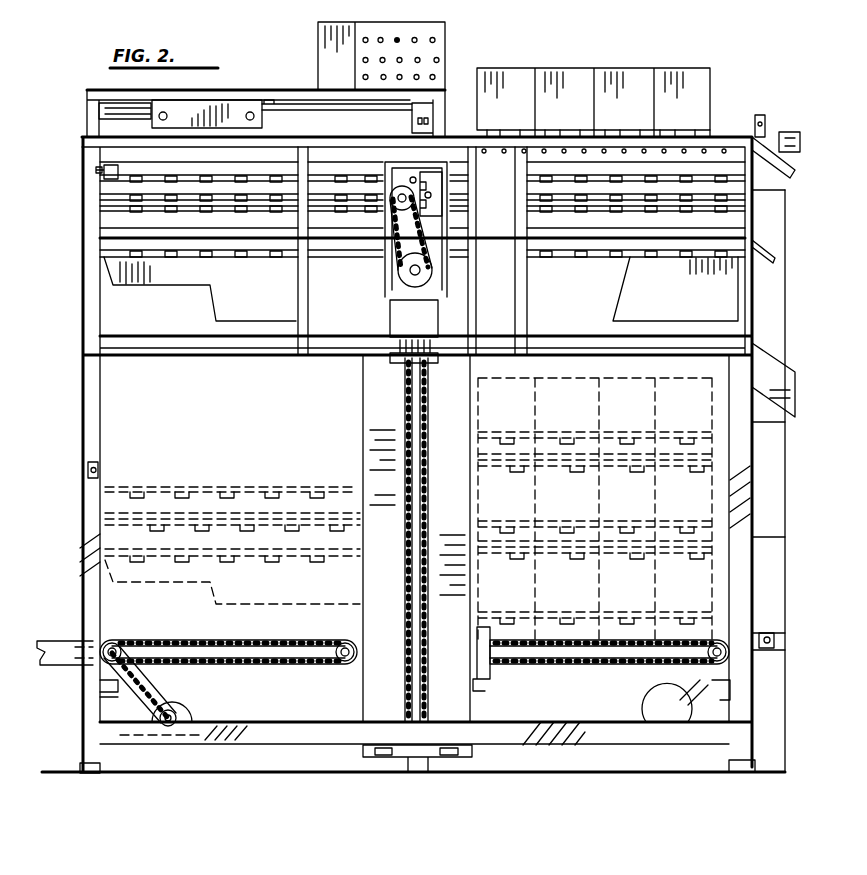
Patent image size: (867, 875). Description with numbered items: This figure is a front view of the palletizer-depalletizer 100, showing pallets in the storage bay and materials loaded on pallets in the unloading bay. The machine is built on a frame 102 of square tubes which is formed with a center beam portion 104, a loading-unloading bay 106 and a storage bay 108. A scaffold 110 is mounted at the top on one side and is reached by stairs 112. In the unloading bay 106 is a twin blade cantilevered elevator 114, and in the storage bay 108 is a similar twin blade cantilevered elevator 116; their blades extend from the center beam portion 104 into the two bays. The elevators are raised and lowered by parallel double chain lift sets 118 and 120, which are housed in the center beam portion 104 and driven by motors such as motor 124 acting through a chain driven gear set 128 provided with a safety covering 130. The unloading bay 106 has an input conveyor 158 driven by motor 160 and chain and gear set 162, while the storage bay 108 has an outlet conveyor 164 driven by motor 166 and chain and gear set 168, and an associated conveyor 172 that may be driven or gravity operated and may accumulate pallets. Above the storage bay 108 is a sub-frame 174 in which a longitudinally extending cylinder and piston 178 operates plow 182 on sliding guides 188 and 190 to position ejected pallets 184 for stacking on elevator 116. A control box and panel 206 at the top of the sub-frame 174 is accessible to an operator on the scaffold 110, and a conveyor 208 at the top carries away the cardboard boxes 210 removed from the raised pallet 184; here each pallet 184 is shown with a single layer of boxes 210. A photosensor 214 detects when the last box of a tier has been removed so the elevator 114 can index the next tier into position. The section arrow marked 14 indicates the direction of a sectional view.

The palletizer-depalletizer 100 is at (458, 102).
The frame 102 is at (88, 518).
The center beam portion 104 is at (356, 385).
The loading-unloading bay 106 is at (637, 382).
The storage bay 108 is at (130, 449).
The scaffold 110 is at (290, 361).
The stairs 112 is at (760, 375).
The twin blade cantilevered elevator 114 is at (652, 268).
The twin blade cantilevered elevator 116 is at (164, 279).
The parallel double lift set 118 is at (420, 648).
The parallel double lift set 120 is at (407, 563).
The motor 124 is at (390, 335).
The chain driven gear set 128 is at (447, 258).
The safety covering 130 is at (388, 262).
The section view indicator 14 is at (243, 632).
The input conveyor 158 is at (602, 655).
The motor 160 is at (670, 735).
The chain and gear set 162 is at (700, 695).
The outlet conveyor 164 is at (266, 640).
The motor 166 is at (190, 735).
The chain and gear set 168 is at (133, 697).
The conveyor 172 is at (56, 658).
The sub-frame 174 is at (96, 88).
The longitudinally extending cylinder and piston 178 is at (118, 112).
The plow 182 is at (420, 110).
The pallet 184 is at (106, 247).
The sliding guide 188 is at (165, 115).
The sliding guide 190 is at (291, 103).
The control box and panel 206 is at (318, 28).
The conveyor 208 is at (712, 148).
The cardboard boxes 210 is at (634, 68).
The photosensor 214 is at (760, 115).